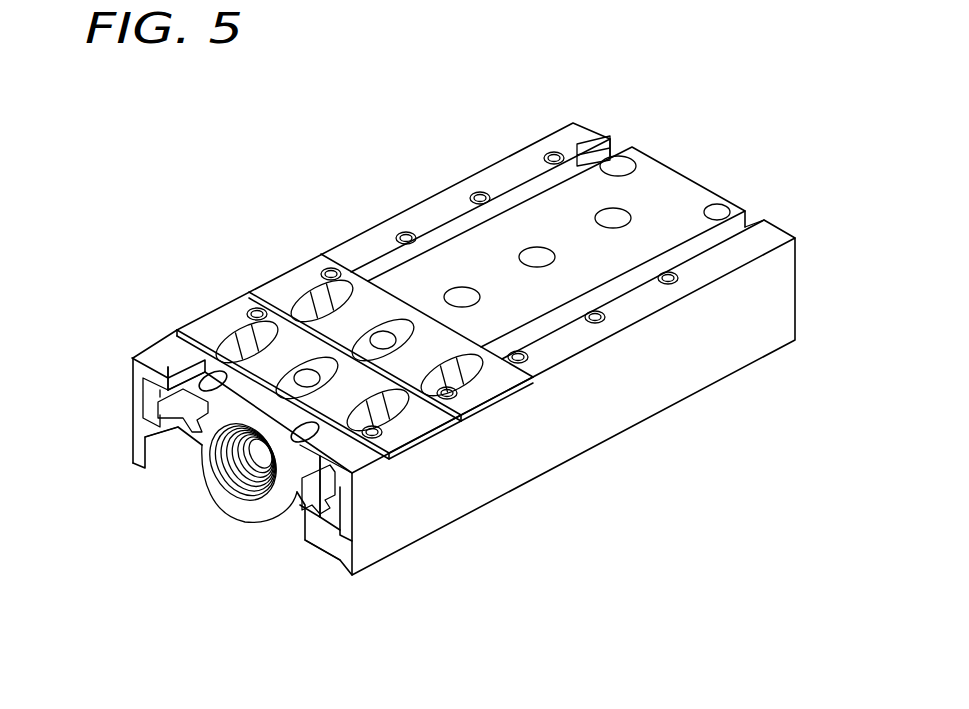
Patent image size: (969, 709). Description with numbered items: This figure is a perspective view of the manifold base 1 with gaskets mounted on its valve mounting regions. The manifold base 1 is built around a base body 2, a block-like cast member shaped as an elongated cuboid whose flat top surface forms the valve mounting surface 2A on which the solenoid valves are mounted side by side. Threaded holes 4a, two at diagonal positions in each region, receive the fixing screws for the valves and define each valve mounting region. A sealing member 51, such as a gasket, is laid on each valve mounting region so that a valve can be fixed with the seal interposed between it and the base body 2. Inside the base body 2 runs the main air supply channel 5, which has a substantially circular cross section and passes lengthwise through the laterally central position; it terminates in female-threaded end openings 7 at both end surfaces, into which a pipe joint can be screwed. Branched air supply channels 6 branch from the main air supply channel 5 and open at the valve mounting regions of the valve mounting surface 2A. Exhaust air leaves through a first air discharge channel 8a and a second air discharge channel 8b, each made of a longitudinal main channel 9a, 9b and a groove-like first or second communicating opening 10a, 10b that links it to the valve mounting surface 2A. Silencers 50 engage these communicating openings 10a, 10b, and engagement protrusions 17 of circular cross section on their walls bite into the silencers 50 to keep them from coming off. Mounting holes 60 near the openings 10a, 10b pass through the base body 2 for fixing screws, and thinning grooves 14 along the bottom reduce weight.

The manifold base 1 is at (818, 119).
The base body 2 is at (740, 393).
The valve mounting surface 2A is at (517, 170).
The engagement protrusion 17 is at (610, 140).
The silencer 50 is at (452, 225).
The branched air supply channel 6 is at (392, 336).
The mounting hole 60 is at (717, 212).
The first communicating opening 10a is at (175, 366).
The second communicating opening 10b is at (735, 225).
The threaded hole 4a is at (331, 268).
The sealing member 51 is at (283, 292).
The first air discharge channel 8a is at (150, 391).
The second air discharge channel 8b is at (340, 493).
The first main channel 9a is at (162, 410).
The second main channel 9b is at (314, 498).
The thinning groove 14 is at (177, 450).
The end opening 7 is at (217, 465).
The main air supply channel 5 is at (255, 474).